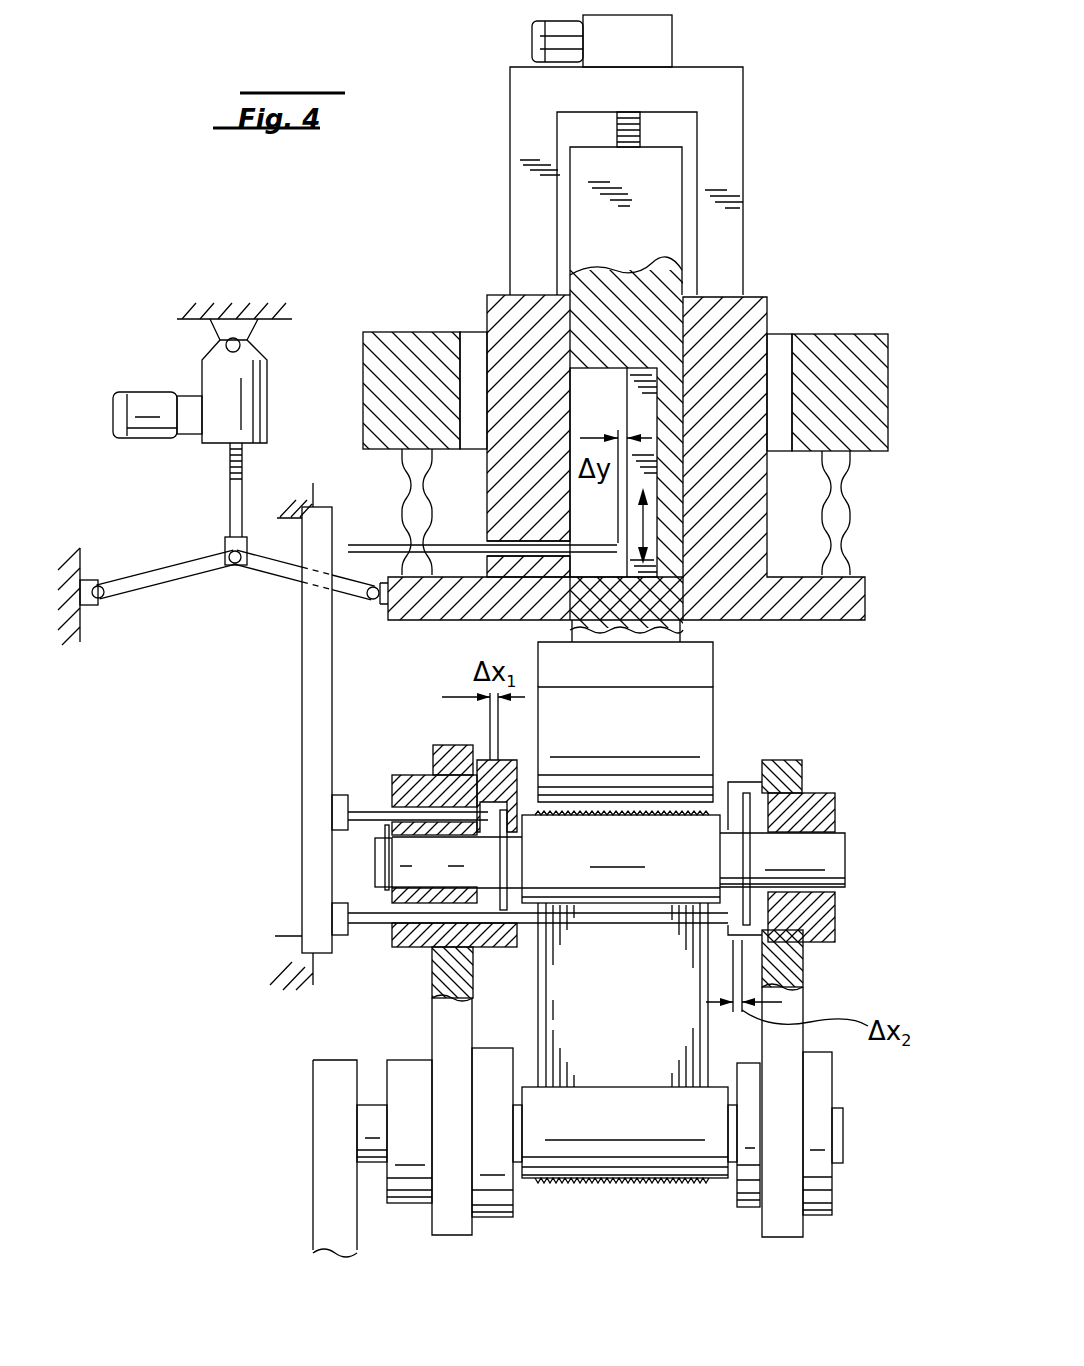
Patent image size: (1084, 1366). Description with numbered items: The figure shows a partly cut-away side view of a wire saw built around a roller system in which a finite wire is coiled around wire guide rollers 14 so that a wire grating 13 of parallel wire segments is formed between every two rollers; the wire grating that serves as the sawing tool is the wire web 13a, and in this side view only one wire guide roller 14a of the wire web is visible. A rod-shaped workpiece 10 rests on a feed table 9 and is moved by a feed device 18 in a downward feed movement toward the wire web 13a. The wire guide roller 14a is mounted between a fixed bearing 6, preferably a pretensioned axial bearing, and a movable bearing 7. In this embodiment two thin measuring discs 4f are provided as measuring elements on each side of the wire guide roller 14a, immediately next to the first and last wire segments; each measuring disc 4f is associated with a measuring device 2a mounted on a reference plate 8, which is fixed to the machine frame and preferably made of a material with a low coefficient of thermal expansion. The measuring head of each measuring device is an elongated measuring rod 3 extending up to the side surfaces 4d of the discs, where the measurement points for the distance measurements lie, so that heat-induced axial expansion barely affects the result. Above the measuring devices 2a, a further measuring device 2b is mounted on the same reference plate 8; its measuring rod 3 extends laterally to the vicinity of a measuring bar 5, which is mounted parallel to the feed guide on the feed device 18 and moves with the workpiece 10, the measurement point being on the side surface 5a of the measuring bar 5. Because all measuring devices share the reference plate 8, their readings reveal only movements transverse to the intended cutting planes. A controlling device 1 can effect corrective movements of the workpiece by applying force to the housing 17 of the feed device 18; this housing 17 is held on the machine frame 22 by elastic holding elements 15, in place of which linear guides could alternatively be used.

The controlling device 1 is at (230, 492).
The measuring device 2a is at (340, 815).
The measuring device 2b is at (364, 597).
The measuring rod 3 is at (380, 547).
The side surface 4d is at (497, 833).
The measuring disc 4f is at (507, 868).
The measuring bar 5 is at (628, 511).
The side surface 5a is at (625, 406).
The fixed bearing 6 is at (415, 790).
The movable bearing 7 is at (828, 803).
The reference plate 8 is at (318, 700).
The feed table 9 is at (700, 655).
The workpiece 10 is at (697, 712).
The wire grating 13 is at (553, 1007).
The wire web 13a is at (690, 813).
The wire guide roller 14 is at (660, 1165).
The wire guide roller 14a is at (620, 905).
The elastic holding element 15 is at (414, 492).
The housing 17 is at (858, 596).
The feed device 18 is at (668, 185).
The machine frame 22 is at (838, 362).